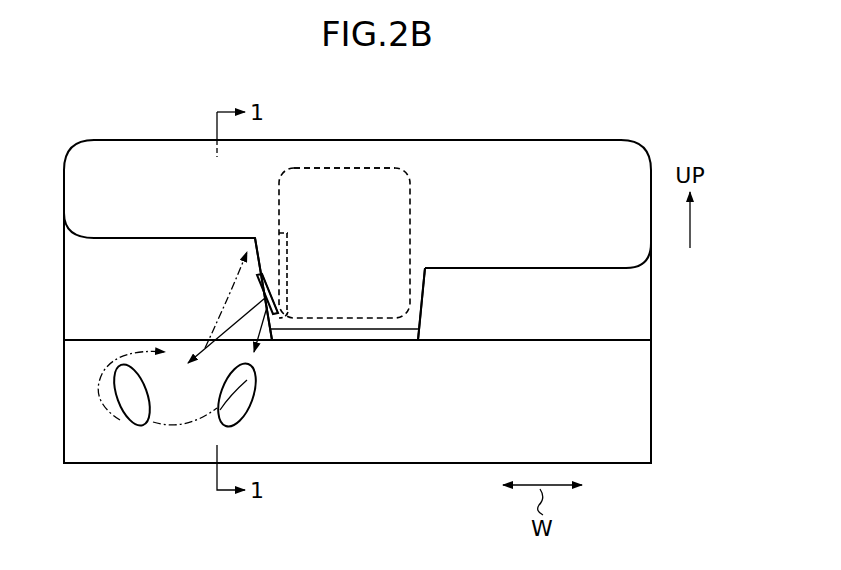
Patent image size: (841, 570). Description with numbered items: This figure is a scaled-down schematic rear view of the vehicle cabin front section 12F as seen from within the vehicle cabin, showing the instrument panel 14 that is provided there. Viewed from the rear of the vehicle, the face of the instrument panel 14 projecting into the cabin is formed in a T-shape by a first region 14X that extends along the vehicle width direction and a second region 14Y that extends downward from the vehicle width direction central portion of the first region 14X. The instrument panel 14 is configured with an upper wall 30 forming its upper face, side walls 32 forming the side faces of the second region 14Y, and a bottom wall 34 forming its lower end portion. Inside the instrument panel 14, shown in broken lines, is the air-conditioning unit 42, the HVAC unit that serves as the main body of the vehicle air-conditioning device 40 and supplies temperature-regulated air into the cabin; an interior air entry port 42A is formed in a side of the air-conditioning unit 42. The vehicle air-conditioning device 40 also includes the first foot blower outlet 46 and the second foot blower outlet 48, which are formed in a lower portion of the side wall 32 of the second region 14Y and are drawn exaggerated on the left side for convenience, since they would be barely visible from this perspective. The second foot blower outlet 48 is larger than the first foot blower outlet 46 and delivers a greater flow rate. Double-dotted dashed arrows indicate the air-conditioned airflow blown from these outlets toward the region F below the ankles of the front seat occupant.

The instrument panel 14 is at (565, 113).
The vehicle cabin front section 12F is at (138, 132).
The first region 14X is at (515, 138).
The second region 14Y is at (426, 315).
The upper wall 30 is at (478, 139).
The side walls 32 is at (258, 270).
The bottom wall 34 is at (88, 342).
The vehicle air-conditioning device 40 is at (373, 156).
The air-conditioning unit 42 is at (343, 167).
The interior air entry port 42A is at (277, 244).
The first foot blower outlet 46 is at (276, 316).
The second foot blower outlet 48 is at (265, 283).
The region downward from the ankles of the front seat occupant F is at (131, 421).